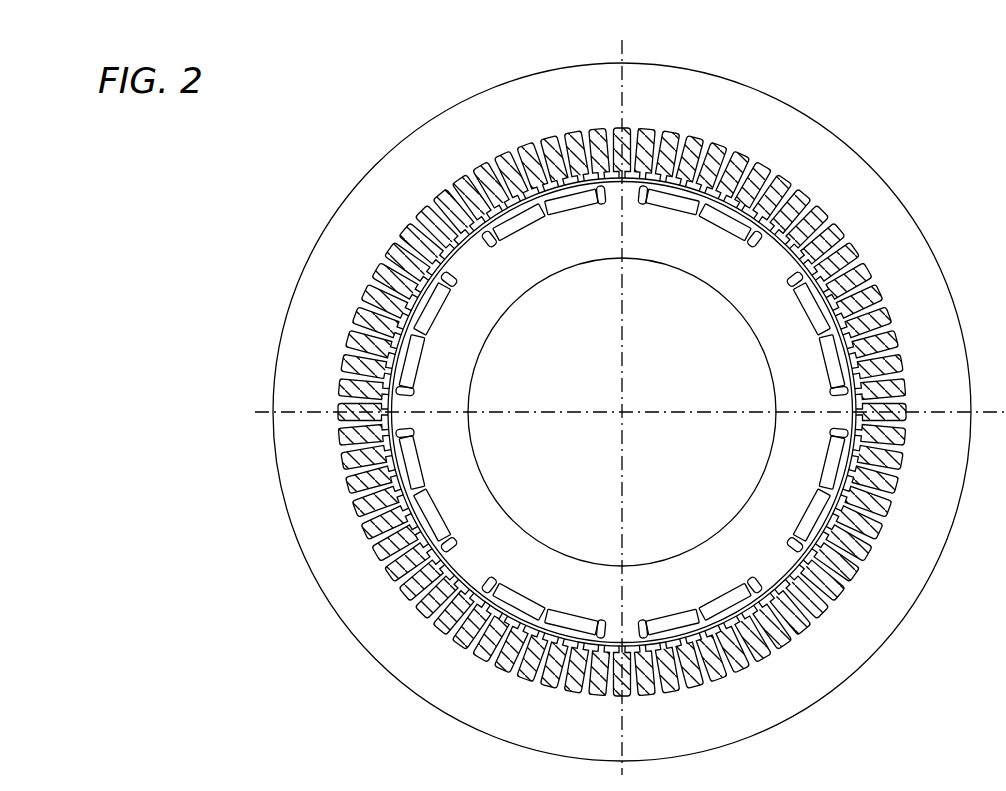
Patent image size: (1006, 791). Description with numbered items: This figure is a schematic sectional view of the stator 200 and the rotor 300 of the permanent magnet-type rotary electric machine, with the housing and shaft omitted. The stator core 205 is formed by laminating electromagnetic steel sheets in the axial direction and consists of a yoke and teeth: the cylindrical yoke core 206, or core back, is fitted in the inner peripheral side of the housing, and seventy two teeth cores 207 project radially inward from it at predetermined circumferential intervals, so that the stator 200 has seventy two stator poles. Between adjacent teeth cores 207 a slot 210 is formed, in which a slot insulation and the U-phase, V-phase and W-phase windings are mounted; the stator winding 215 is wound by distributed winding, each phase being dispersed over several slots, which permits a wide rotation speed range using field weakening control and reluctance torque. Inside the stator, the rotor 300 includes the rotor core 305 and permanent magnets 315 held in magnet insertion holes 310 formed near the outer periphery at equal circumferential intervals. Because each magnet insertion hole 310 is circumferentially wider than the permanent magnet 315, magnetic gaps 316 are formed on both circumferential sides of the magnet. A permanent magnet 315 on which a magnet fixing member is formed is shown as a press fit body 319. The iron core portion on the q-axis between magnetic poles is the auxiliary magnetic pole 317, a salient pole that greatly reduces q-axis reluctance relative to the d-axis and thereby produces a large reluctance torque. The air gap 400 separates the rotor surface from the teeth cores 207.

The stator 200 is at (342, 197).
The stator core 205 is at (446, 104).
The yoke core 206 is at (790, 170).
The teeth core 207 is at (808, 208).
The slot 210 is at (855, 247).
The stator winding 215 is at (745, 165).
The rotor 300 is at (772, 385).
The rotor core 305 is at (740, 290).
The magnet insertion hole 310 is at (445, 517).
The permanent magnet 315 is at (410, 353).
The magnetic gap 316 is at (413, 383).
The auxiliary magnetic pole 317 is at (465, 250).
The press fit body 319 is at (565, 622).
The air gap 400 is at (610, 178).